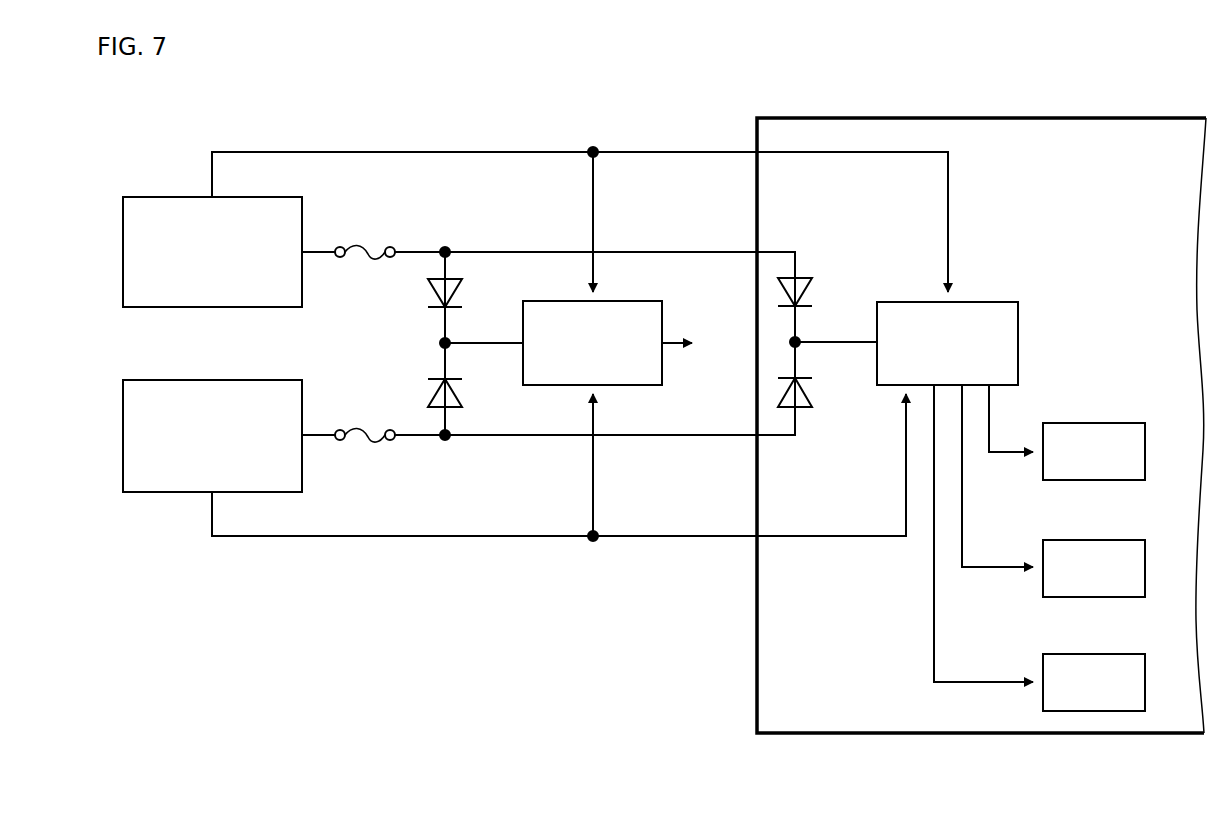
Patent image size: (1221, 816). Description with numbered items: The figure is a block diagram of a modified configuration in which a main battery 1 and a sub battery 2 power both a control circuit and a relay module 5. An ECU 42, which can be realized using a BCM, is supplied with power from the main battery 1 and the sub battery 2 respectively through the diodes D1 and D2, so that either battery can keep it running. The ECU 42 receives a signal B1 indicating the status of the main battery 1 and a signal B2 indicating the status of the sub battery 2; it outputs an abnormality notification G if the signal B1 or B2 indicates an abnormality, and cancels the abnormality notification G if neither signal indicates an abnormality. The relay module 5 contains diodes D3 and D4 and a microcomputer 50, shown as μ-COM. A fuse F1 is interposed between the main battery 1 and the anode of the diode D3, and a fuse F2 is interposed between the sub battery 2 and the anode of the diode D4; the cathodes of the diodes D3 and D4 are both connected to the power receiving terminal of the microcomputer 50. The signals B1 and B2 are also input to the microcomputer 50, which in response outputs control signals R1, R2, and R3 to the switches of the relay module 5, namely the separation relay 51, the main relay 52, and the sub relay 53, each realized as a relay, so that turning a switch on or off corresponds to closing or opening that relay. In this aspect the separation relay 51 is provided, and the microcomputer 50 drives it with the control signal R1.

The main battery 1 is at (157, 197).
The sub battery 2 is at (153, 380).
The relay module 5 is at (950, 736).
The ECU 42 is at (628, 301).
The microcomputer 50 is at (985, 302).
The separation relay 51 is at (1115, 423).
The main relay 52 is at (1118, 540).
The sub relay 53 is at (1117, 654).
The fuse F1 is at (371, 244).
The fuse F2 is at (371, 428).
The diode D1 is at (460, 294).
The diode D2 is at (460, 393).
The diode D3 is at (810, 292).
The diode D4 is at (810, 392).
The signal B1 is at (592, 130).
The signal B2 is at (592, 562).
The abnormality notification G is at (692, 344).
The control signal R1 is at (1007, 433).
The control signal R2 is at (997, 492).
The control signal R3 is at (983, 548).